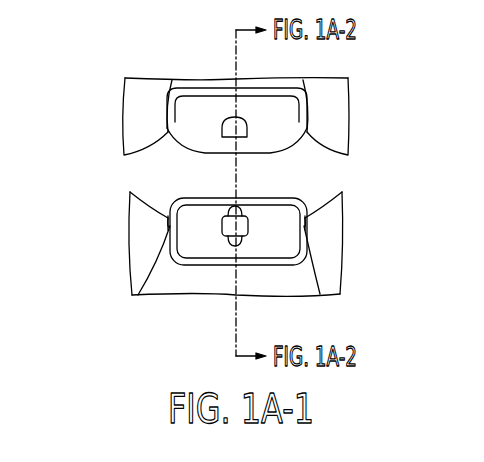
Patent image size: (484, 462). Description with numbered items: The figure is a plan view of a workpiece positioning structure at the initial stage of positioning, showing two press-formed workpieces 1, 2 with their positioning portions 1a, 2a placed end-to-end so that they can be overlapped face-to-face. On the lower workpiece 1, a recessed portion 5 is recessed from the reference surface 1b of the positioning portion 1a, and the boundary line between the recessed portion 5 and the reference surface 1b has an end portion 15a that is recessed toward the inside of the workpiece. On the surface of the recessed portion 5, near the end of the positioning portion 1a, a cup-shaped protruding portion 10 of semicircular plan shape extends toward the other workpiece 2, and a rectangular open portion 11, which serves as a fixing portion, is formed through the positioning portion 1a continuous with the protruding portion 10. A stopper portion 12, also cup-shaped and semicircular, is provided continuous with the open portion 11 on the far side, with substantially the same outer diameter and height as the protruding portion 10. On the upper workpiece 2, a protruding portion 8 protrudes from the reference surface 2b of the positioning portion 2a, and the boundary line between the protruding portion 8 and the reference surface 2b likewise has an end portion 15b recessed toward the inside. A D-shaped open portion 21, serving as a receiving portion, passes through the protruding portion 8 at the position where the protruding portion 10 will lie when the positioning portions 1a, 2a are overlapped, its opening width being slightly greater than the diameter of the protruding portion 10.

The workpiece 1 is at (118, 301).
The positioning portion 1a is at (140, 230).
The reference surface 1b is at (142, 268).
The workpiece 2 is at (358, 66).
The positioning portion 2a is at (133, 137).
The reference surface 2b is at (135, 107).
The recessed portion 5 is at (263, 237).
The protruding portion 8 is at (185, 126).
The protruding portion 10 is at (240, 213).
The open portion 11 is at (230, 217).
The stopper portion 12 is at (243, 236).
The end portion 15a is at (136, 297).
The end portion 15b is at (167, 130).
The open portion 21 is at (231, 118).